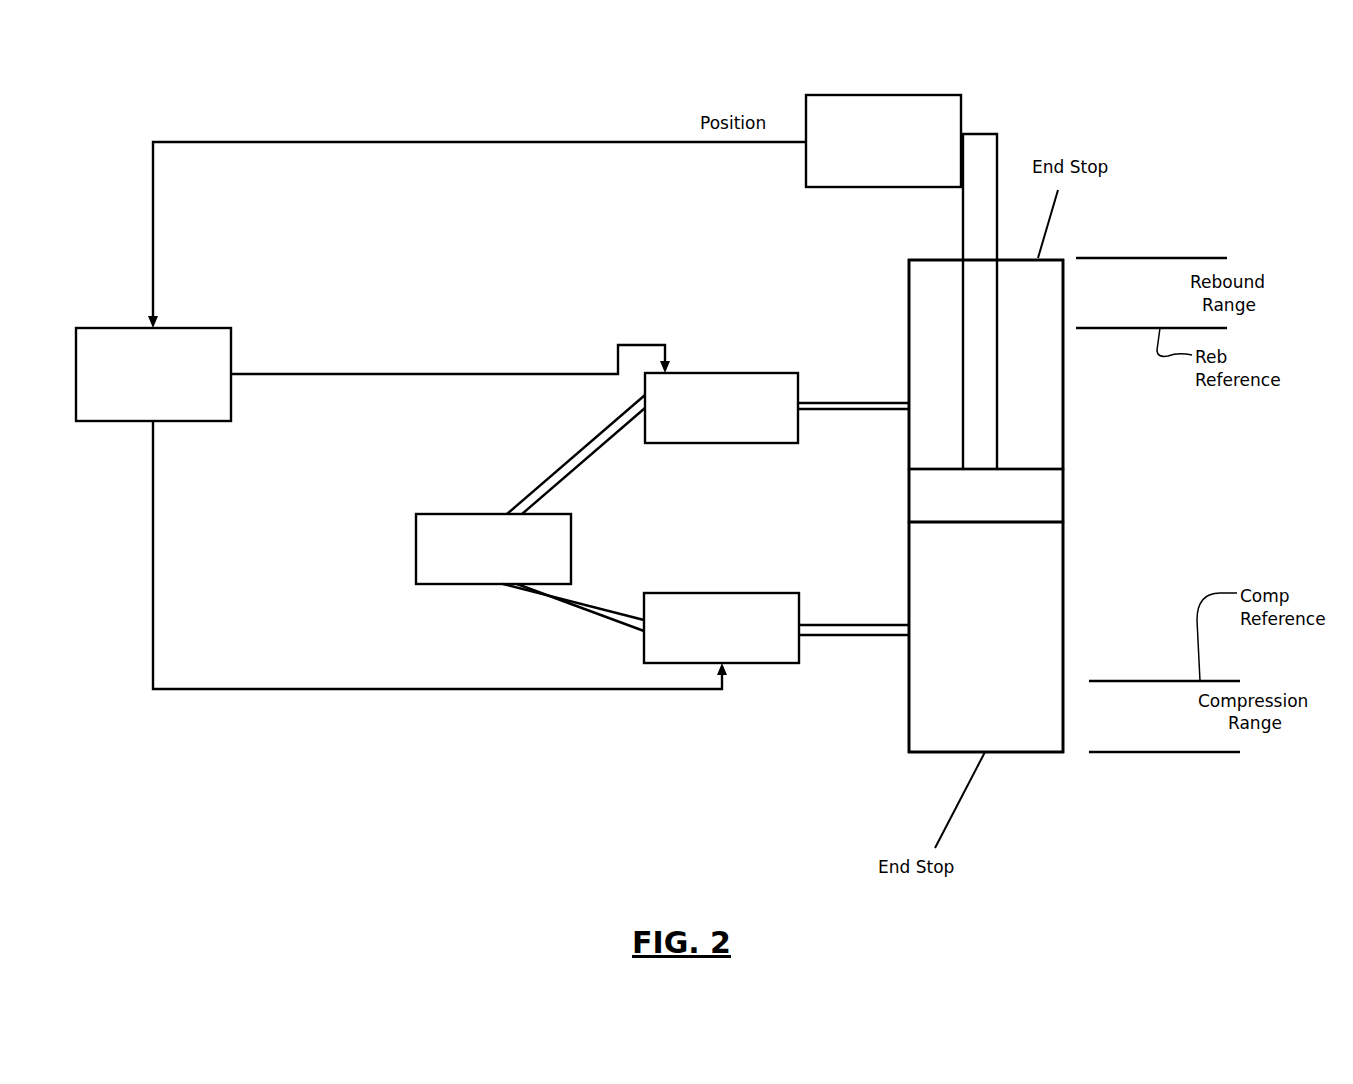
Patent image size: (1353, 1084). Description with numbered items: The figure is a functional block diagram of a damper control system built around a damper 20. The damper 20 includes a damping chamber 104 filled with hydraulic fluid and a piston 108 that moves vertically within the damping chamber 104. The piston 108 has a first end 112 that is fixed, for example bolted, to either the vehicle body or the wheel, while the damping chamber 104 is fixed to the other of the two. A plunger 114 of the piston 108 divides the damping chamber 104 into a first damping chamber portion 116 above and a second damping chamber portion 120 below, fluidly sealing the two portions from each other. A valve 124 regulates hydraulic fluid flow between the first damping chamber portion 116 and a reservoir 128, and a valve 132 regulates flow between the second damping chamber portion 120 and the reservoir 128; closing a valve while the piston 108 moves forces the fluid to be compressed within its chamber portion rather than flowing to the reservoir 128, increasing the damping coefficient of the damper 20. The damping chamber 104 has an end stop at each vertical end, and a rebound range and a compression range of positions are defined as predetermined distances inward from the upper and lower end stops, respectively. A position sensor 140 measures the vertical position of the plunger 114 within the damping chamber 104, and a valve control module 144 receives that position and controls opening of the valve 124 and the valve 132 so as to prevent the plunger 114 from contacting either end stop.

The damper 20 is at (940, 258).
The damping chamber 104 is at (1064, 565).
The piston 108 is at (1065, 497).
The first end 112 is at (998, 112).
The plunger 114 is at (995, 504).
The first damping chamber portion 116 is at (1017, 413).
The second damping chamber portion 120 is at (1005, 628).
The valve 124 is at (722, 373).
The reservoir 128 is at (466, 514).
The valve 132 is at (695, 593).
The position sensor 140 is at (853, 95).
The valve control module 144 is at (123, 328).